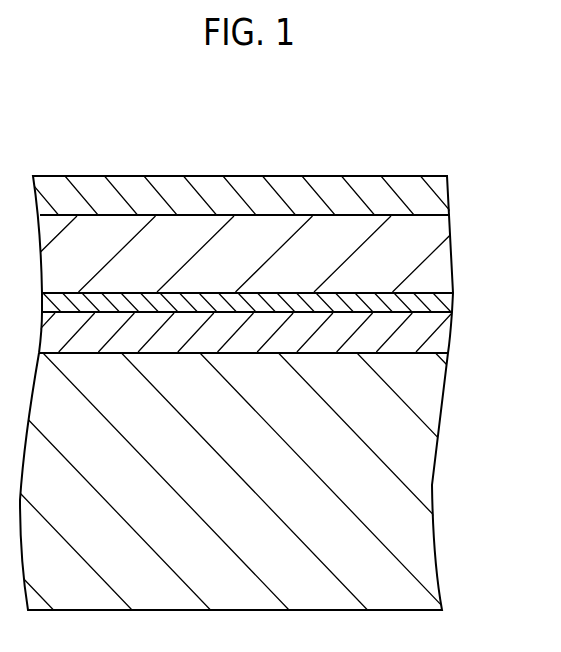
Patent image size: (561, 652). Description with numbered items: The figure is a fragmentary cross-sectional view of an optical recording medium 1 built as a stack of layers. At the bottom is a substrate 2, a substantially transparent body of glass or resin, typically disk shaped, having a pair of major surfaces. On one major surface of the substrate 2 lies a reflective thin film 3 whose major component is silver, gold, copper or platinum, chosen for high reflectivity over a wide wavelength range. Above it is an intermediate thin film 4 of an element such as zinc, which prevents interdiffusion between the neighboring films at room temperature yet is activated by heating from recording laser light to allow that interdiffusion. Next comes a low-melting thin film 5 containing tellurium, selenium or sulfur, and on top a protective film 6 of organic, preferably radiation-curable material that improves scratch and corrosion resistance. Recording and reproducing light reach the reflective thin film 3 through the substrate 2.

The optical recording medium 1 is at (372, 158).
The substrate 2 is at (417, 446).
The reflective thin film 3 is at (437, 351).
The intermediate thin film 4 is at (437, 308).
The low-melting thin film 5 is at (432, 276).
The protective film 6 is at (420, 205).